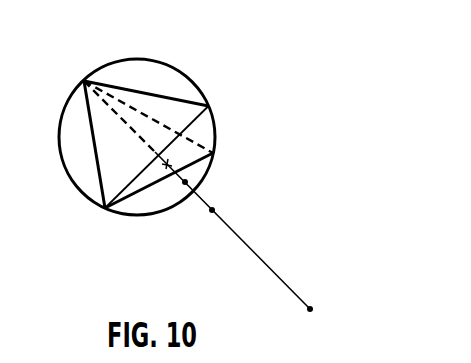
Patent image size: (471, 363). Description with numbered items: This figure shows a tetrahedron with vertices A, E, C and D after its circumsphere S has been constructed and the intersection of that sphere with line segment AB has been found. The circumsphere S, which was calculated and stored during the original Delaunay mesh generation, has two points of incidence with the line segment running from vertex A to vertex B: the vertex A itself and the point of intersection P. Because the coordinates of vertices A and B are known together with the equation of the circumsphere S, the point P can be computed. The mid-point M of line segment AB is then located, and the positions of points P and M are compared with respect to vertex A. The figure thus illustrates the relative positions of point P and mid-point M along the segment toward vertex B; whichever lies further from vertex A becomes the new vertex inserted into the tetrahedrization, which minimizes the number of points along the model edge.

The circumsphere S is at (162, 62).
The vertex A is at (133, 129).
The vertex E is at (172, 149).
The vertex C is at (141, 195).
The vertex D is at (162, 129).
The point of intersection P is at (190, 185).
The mid-point M is at (215, 212).
The vertex B is at (245, 232).